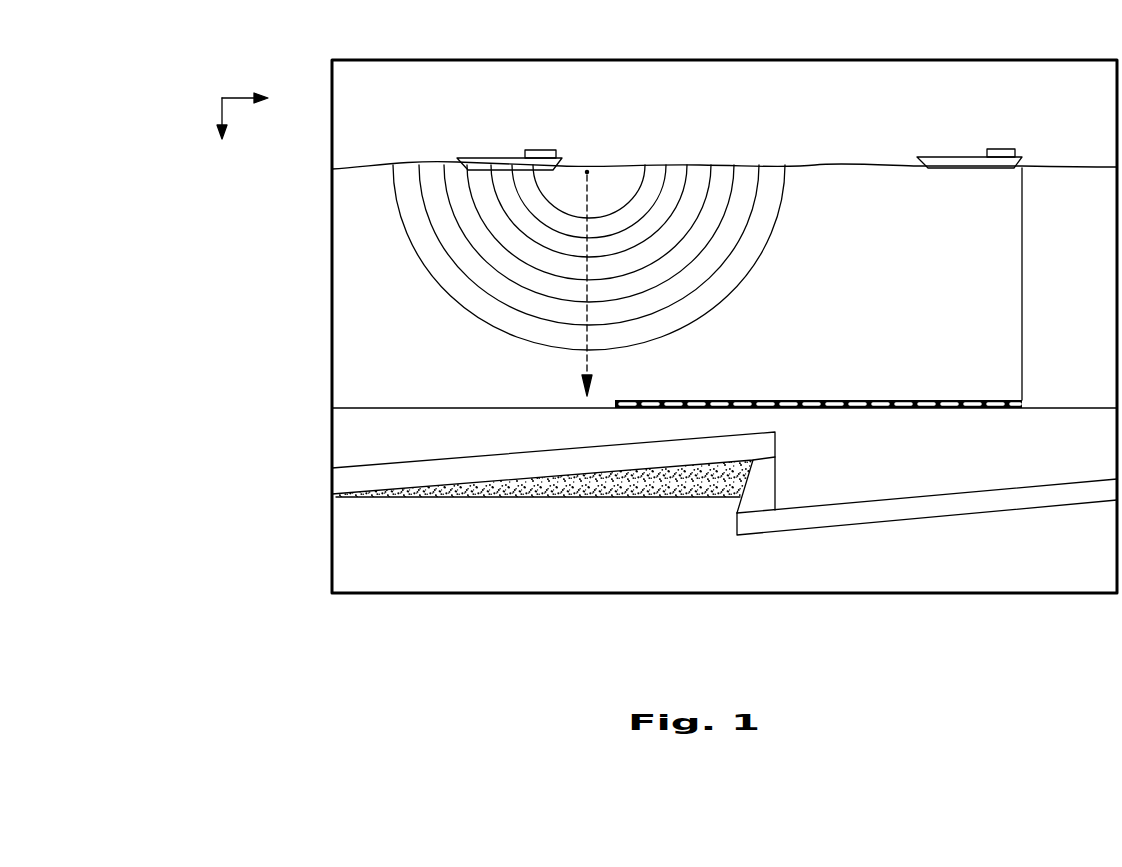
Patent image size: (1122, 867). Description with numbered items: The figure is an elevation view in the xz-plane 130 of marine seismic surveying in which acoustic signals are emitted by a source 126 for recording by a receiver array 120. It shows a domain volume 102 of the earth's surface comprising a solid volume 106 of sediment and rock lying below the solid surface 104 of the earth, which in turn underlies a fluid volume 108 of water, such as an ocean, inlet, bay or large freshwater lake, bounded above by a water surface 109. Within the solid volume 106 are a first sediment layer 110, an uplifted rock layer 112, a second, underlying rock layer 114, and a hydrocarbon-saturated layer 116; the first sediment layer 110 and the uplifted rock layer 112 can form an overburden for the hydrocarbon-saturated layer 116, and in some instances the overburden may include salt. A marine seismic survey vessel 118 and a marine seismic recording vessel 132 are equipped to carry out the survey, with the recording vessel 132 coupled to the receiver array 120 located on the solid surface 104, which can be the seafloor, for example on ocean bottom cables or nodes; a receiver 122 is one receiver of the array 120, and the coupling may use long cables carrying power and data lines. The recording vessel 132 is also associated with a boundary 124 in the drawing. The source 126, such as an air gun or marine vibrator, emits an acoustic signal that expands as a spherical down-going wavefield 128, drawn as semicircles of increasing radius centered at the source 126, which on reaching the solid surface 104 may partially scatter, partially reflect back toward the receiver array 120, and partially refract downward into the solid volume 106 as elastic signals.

The domain volume 102 is at (246, 228).
The solid surface 104 is at (388, 407).
The solid volume 106 is at (352, 427).
The fluid volume 108 is at (352, 313).
The water surface 109 is at (813, 163).
The first sediment layer 110 is at (982, 468).
The uplifted rock layer 112 is at (352, 485).
The second, underlying rock layer 114 is at (455, 582).
The hydrocarbon-saturated layer 116 is at (548, 500).
The marine seismic survey vessel 118 is at (499, 158).
The receiver array 120 is at (800, 416).
The receiver 122 is at (884, 412).
The boundary 124 is at (1046, 167).
The source 126 is at (587, 170).
The down-going wavefield 128 is at (750, 268).
The xz-plane 130 is at (222, 98).
The marine seismic recording vessel 132 is at (958, 157).